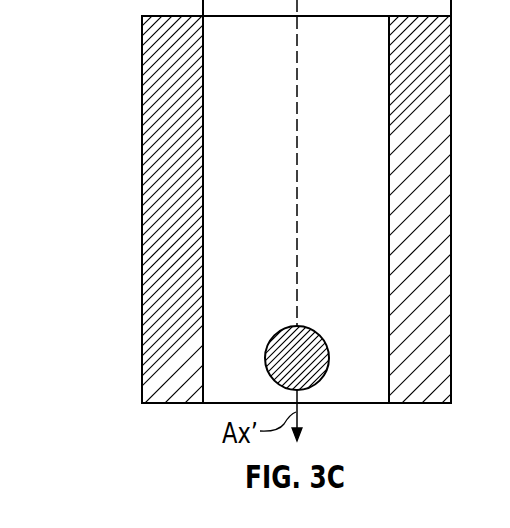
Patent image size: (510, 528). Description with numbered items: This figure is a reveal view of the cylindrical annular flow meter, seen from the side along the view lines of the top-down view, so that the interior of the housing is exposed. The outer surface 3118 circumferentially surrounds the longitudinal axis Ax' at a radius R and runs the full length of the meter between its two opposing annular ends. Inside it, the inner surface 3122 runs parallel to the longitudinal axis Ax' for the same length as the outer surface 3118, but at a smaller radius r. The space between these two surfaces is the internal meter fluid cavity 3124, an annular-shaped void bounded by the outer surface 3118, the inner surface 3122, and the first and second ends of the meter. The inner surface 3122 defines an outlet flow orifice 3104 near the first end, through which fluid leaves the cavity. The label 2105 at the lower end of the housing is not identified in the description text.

The outer surface 3118 is at (142, 57).
The internal meter fluid cavity 3124 is at (162, 118).
The inner surface 3122 is at (371, 162).
The outlet flow orifice 3104 is at (271, 326).
The end face 2105 is at (373, 404).